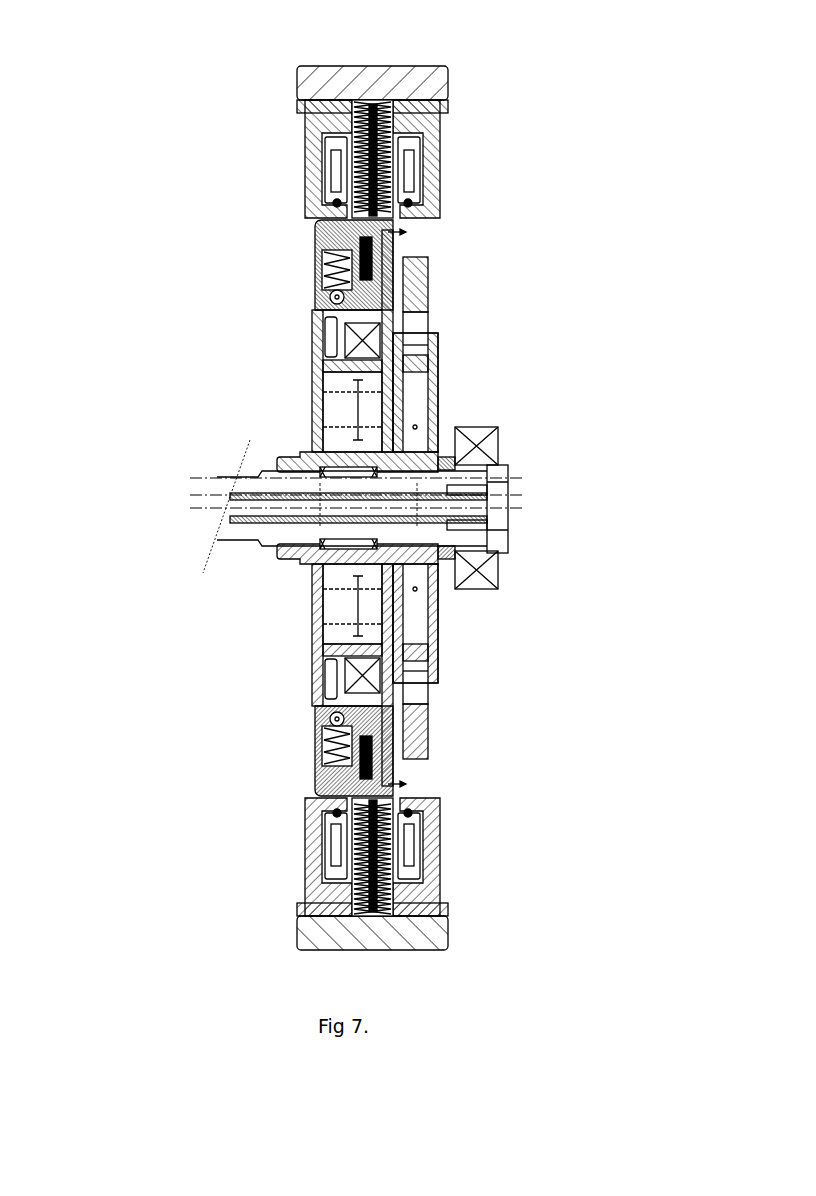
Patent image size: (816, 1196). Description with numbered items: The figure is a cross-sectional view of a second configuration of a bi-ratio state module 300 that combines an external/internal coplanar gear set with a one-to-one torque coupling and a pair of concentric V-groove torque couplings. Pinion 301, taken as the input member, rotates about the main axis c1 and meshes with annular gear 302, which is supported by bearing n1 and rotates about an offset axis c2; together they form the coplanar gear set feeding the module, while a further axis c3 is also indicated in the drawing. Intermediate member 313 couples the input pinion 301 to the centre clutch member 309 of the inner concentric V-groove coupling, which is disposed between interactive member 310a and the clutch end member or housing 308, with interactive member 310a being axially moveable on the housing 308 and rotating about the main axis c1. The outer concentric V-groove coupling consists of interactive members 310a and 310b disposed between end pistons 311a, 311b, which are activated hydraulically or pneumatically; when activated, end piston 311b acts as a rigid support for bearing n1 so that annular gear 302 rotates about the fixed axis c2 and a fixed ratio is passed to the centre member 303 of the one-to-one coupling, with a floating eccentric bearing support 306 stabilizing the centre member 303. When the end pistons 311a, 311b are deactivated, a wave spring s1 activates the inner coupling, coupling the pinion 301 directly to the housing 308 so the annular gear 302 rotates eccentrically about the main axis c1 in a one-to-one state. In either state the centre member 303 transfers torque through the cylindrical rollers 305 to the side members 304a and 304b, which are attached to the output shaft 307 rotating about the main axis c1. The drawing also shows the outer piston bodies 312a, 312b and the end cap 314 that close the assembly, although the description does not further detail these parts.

The bi-ratio state module 300 is at (148, 270).
The pinion 301 is at (293, 455).
The annular gear 302 is at (333, 360).
The centre member 303 is at (428, 288).
The side member 304a is at (437, 393).
The side member 304b is at (438, 422).
The cylindrical rollers 305 is at (437, 343).
The floating eccentric bearing support 306 is at (440, 425).
The shaft 307 is at (258, 480).
The housing 308 is at (315, 242).
The centre clutch member 309 is at (315, 267).
The interactive member 310a is at (335, 205).
The interactive member 310b is at (417, 197).
The end piston 311a is at (340, 158).
The end piston 311b is at (403, 158).
The first housing half 312a is at (322, 133).
The second housing half 312b is at (440, 125).
The intermediate member 313 is at (312, 398).
The cap 314 is at (305, 88).
The bearing n1 is at (333, 333).
The wave spring s1 is at (383, 255).
The main axis c1 is at (371, 518).
The offset axis c2 is at (371, 477).
The third axis c3 is at (535, 494).